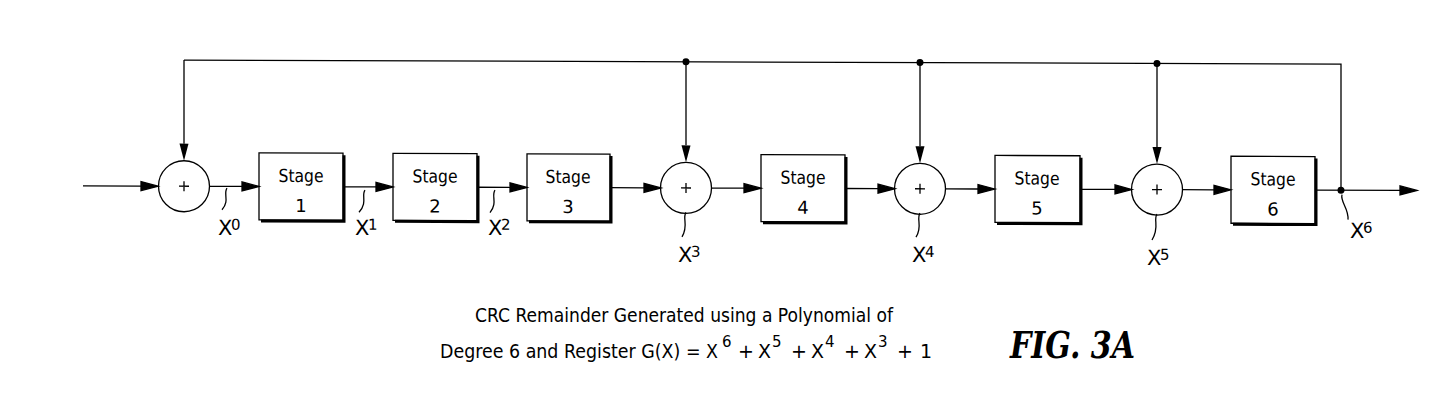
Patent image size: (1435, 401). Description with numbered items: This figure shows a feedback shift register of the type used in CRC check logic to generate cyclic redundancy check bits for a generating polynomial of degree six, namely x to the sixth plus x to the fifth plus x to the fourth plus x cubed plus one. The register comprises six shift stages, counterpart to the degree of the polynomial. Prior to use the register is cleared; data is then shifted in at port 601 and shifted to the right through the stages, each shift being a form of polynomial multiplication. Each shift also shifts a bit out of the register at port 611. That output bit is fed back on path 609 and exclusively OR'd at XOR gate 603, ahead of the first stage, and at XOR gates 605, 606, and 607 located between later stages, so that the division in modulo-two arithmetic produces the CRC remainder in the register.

The input port 601 is at (112, 185).
The XOR gate 603 is at (202, 165).
The XOR gate 605 is at (703, 166).
The XOR gate 606 is at (937, 166).
The XOR gate 607 is at (1175, 166).
The feedback path 609 is at (1290, 57).
The output port 611 is at (1372, 184).